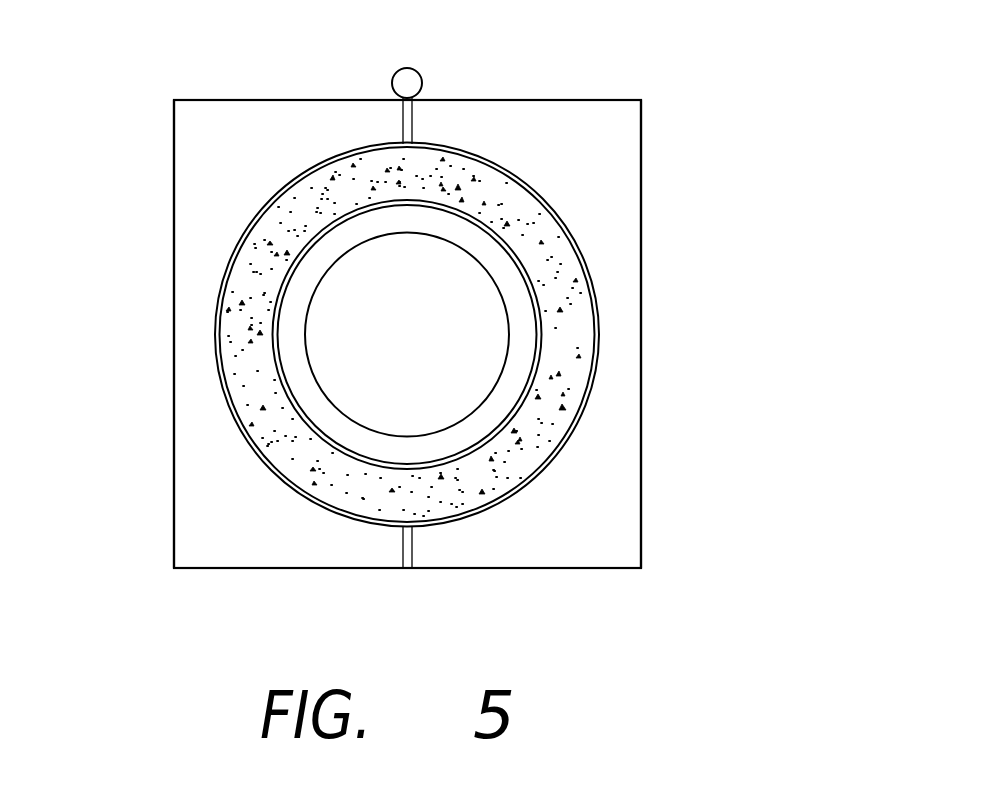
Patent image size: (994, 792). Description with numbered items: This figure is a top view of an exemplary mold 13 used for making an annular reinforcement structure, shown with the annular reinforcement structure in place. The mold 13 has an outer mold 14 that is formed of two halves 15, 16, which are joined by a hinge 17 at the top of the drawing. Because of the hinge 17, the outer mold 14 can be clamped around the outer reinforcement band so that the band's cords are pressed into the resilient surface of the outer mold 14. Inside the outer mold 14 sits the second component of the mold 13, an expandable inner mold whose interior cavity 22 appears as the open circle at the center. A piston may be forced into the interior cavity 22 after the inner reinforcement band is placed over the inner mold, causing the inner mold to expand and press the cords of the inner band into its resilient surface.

The mold 13 is at (695, 89).
The outer mold 14 is at (524, 99).
The first half of outer mold 15 is at (610, 188).
The second half of outer mold 16 is at (203, 187).
The hinge 17 is at (411, 66).
The interior cavity 22 is at (468, 379).